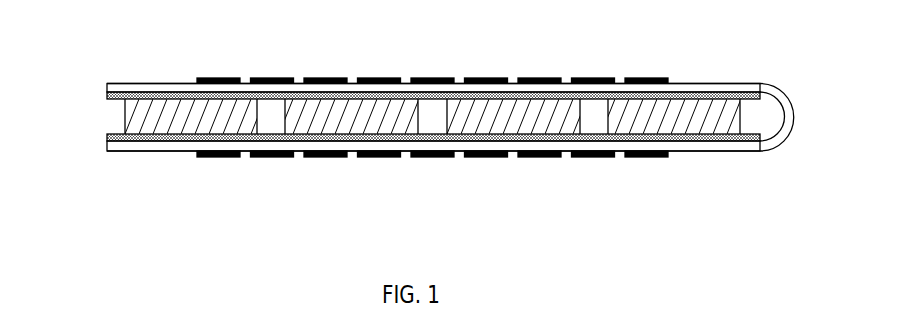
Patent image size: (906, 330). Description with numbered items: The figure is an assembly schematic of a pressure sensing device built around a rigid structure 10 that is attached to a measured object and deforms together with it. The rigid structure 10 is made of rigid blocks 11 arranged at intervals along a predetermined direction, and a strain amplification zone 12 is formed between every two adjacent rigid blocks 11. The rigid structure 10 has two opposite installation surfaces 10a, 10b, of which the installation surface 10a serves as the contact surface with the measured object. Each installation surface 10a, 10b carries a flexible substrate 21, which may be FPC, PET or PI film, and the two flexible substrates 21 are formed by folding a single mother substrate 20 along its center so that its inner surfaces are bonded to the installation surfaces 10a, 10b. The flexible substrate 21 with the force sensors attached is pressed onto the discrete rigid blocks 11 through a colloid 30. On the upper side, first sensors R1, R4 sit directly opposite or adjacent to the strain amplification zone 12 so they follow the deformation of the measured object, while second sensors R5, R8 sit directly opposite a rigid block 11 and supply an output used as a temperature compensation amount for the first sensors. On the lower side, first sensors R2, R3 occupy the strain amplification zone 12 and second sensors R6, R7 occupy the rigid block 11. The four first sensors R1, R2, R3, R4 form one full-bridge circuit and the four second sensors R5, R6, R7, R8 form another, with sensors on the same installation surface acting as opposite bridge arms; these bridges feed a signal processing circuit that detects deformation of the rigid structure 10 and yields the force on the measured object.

The rigid structure 10 is at (387, 123).
The installation surface 10a is at (517, 89).
The installation surface 10b is at (518, 141).
The rigid block 11 is at (155, 113).
The strain amplification zone 12 is at (271, 113).
The mother substrate 20 is at (414, 129).
The flexible substrate 21 is at (135, 88).
The colloid 30 is at (107, 93).
The first sensor R1 is at (272, 43).
The first sensor R2 is at (254, 197).
The first sensor R3 is at (263, 157).
The first sensor R4 is at (273, 78).
The second sensor R5 is at (213, 78).
The second sensor R6 is at (213, 157).
The second sensor R7 is at (332, 157).
The second sensor R8 is at (330, 78).